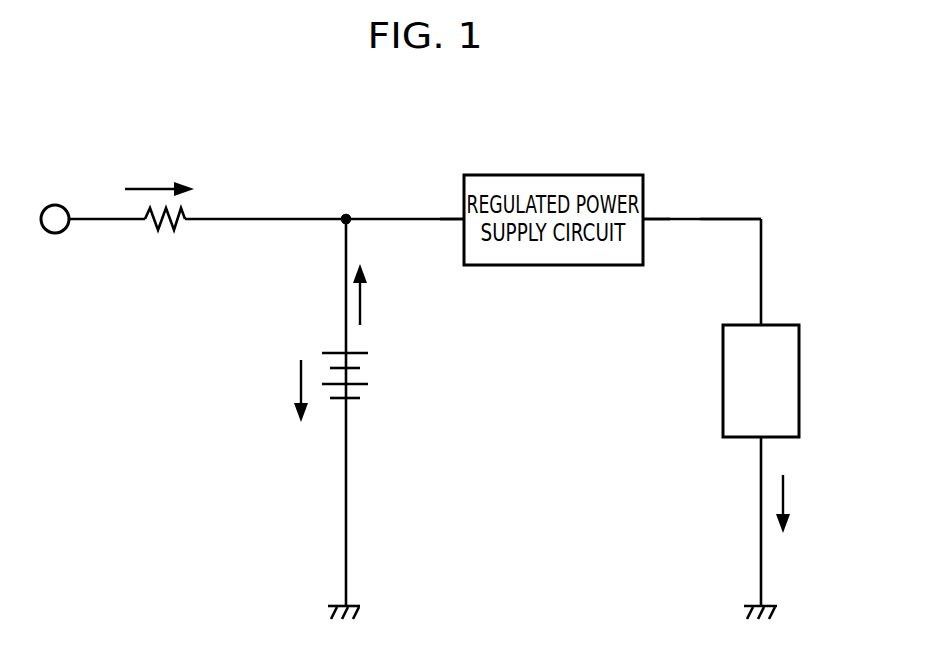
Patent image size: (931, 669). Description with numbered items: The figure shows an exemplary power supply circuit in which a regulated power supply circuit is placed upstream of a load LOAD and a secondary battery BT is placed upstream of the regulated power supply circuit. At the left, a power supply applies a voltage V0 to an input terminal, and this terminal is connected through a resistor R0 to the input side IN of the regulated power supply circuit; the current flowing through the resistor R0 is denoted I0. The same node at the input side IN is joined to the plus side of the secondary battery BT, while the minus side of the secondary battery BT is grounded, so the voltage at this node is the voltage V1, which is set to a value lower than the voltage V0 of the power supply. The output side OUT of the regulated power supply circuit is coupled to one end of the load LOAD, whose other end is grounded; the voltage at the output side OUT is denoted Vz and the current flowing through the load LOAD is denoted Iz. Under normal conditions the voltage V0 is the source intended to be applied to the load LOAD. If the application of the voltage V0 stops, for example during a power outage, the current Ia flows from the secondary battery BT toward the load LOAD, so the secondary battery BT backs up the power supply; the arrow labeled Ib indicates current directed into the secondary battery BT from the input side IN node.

The voltage V0 is at (55, 240).
The resistor R0 is at (165, 242).
The current I0 is at (173, 188).
The voltage V1 is at (335, 198).
The input side IN is at (450, 237).
The output side OUT is at (665, 237).
The voltage Vz is at (719, 197).
The current Ia is at (368, 294).
The current Ib is at (300, 378).
The secondary battery BT is at (360, 375).
The load LOAD is at (761, 381).
The current Iz is at (783, 491).